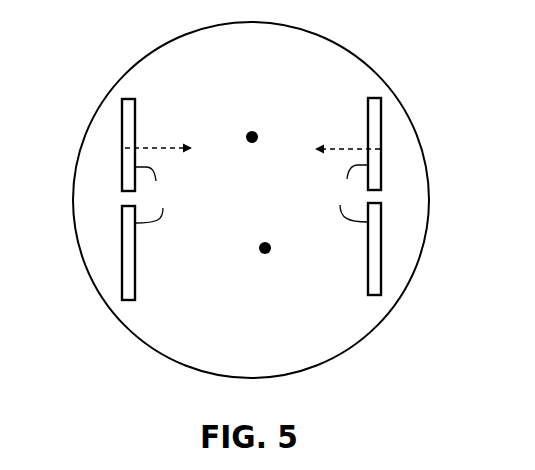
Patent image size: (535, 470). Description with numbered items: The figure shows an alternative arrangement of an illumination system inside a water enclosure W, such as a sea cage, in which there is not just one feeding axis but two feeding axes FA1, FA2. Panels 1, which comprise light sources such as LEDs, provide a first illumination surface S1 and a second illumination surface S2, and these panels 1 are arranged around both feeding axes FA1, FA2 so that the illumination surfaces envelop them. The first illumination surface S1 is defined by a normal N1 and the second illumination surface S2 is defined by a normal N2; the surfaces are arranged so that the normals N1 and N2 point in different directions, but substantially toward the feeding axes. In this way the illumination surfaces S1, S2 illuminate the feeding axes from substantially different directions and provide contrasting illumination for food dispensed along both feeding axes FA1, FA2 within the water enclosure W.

The water enclosure W is at (75, 168).
The panel 1 is at (133, 109).
The first illumination surface S1 is at (344, 193).
The second illumination surface S2 is at (158, 195).
The normal N1 is at (330, 150).
The normal N2 is at (175, 150).
The feeding axis FA1 is at (250, 135).
The feeding axis FA2 is at (263, 246).